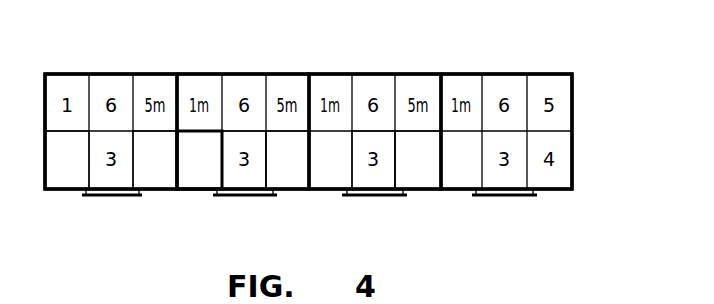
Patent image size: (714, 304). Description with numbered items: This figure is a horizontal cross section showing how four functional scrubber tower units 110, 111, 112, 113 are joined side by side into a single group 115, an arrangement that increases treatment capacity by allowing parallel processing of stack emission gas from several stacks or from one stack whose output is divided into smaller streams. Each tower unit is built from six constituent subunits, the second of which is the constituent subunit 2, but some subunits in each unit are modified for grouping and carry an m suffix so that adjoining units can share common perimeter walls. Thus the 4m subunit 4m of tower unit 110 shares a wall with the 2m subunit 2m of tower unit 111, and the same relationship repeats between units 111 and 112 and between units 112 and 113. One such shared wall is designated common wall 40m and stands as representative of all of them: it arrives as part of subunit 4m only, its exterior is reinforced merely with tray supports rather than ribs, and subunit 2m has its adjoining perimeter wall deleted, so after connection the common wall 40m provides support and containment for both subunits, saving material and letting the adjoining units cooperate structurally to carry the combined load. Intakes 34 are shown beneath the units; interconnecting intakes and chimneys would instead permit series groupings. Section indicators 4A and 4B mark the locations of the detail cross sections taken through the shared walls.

The constituent subunit 2 is at (44, 191).
The group 115 is at (583, 71).
The scrubber tower unit 110 is at (104, 71).
The scrubber tower unit 111 is at (240, 71).
The scrubber tower unit 112 is at (372, 71).
The scrubber tower unit 113 is at (497, 71).
The section view indicator 4B is at (24, 146).
The section view indicator 4A is at (155, 146).
The modified subunit 4m is at (155, 191).
The modified subunit 2m is at (218, 178).
The common wall 40m is at (184, 176).
The intake 34 is at (377, 198).